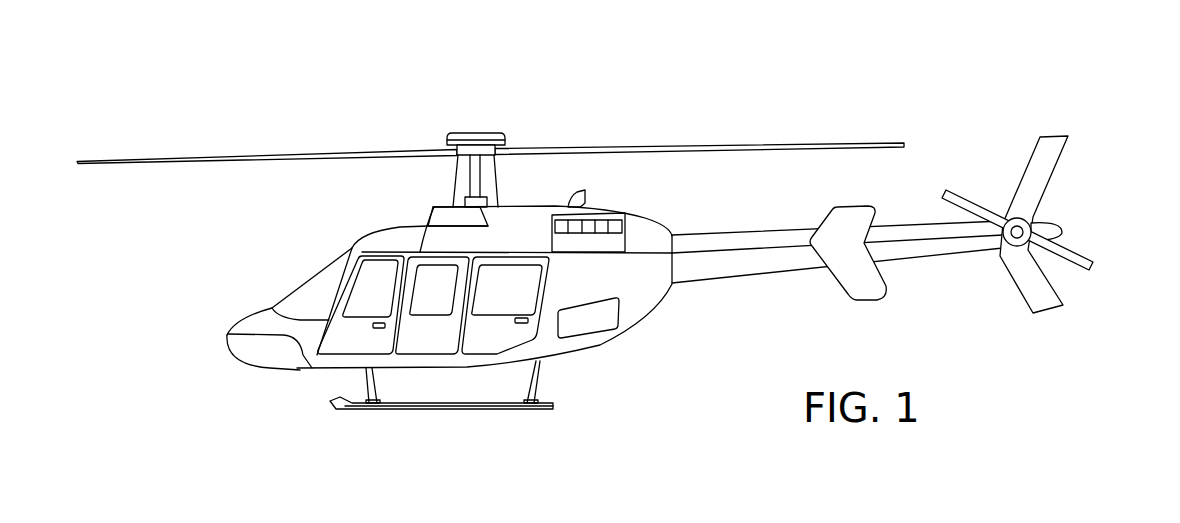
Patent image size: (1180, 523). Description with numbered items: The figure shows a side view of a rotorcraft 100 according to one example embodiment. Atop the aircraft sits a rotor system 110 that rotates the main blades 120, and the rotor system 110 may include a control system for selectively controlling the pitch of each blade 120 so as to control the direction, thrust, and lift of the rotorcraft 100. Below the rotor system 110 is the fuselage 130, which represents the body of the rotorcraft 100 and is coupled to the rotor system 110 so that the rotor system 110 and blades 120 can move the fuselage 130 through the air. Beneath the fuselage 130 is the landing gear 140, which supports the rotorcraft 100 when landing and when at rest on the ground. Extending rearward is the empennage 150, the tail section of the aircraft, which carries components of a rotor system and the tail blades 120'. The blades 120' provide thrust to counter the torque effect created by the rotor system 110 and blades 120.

The rotorcraft 100 is at (324, 90).
The rotor system 110 is at (477, 133).
The blades 120 is at (490, 124).
The blades 120' is at (1059, 224).
The fuselage 130 is at (272, 367).
The landing gear 140 is at (417, 412).
The empennage 150 is at (752, 279).